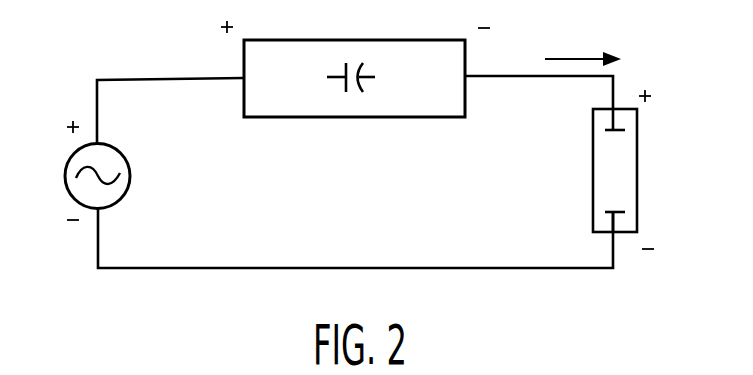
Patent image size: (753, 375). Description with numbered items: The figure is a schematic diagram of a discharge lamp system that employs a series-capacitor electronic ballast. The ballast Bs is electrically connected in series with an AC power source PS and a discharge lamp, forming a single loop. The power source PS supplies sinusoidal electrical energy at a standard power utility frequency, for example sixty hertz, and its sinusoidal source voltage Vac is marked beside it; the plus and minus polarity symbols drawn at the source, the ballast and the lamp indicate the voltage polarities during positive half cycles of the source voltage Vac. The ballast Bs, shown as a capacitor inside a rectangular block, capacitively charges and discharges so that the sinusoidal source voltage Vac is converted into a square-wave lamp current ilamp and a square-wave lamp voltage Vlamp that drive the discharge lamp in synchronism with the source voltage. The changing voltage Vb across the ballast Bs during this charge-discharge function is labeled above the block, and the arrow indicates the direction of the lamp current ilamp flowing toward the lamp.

The AC power source PS is at (110, 192).
The ballast Bs is at (428, 98).
The lamp voltage Vlamp is at (650, 169).
The source voltage Vac is at (51, 170).
The ballast voltage Vb is at (355, 20).
The lamp current ilamp is at (579, 42).